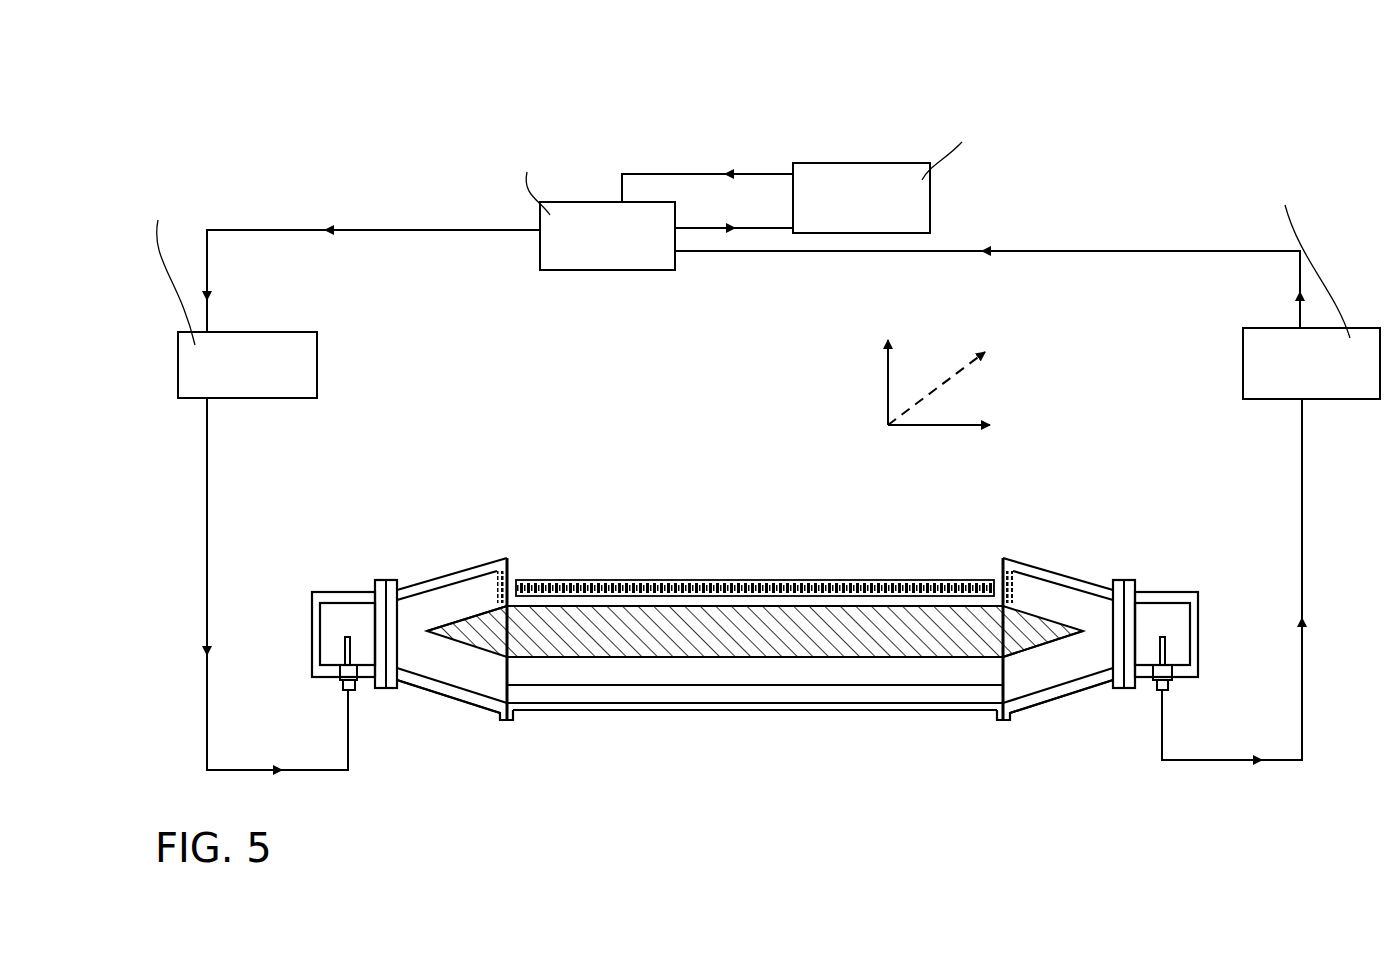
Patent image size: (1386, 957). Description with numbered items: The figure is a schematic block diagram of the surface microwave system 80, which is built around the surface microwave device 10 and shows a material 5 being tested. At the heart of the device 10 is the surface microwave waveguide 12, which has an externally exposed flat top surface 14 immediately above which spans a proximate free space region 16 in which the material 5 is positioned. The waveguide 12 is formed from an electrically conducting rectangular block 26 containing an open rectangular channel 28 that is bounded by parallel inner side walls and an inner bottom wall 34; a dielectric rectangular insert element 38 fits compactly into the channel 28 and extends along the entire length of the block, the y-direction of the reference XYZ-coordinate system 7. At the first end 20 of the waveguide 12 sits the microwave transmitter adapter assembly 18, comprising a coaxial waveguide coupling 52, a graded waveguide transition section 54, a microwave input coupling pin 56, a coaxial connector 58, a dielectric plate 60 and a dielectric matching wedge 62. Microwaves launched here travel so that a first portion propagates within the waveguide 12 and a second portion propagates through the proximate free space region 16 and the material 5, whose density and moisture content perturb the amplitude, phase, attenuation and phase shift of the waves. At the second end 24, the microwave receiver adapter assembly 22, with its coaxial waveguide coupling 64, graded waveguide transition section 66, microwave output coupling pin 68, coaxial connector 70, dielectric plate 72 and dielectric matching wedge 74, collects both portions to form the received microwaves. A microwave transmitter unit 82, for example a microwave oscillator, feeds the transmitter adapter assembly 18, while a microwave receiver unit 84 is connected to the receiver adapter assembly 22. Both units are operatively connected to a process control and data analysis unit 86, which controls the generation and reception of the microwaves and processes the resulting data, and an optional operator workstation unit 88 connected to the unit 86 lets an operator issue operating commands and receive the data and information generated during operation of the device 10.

The material 5 is at (722, 580).
The reference XYZ-coordinate system 7 is at (938, 387).
The surface microwave device 10 is at (467, 353).
The surface microwave waveguide 12 is at (755, 720).
The externally exposed flat top surface 14 is at (795, 605).
The proximate free space region 16 is at (612, 600).
The microwave transmitter adapter assembly 18 is at (413, 770).
The first end 20 is at (520, 625).
The microwave receiver adapter assembly 22 is at (1098, 770).
The second end 24 is at (985, 640).
The electrically conducting rectangular block 26 is at (822, 690).
The open rectangular channel 28 is at (760, 660).
The inner bottom wall 34 is at (673, 690).
The dielectric rectangular insert element 38 is at (862, 632).
The coaxial waveguide coupling 52 is at (342, 592).
The graded waveguide transition section 54 is at (425, 580).
The microwave input coupling pin 56 is at (343, 643).
The coaxial connector 58 is at (340, 678).
The dielectric plate 60 is at (482, 580).
The dielectric matching wedge 62 is at (487, 652).
The coaxial waveguide coupling 64 is at (1165, 595).
The graded waveguide transition section 66 is at (1072, 585).
The microwave output coupling pin 68 is at (1168, 641).
The coaxial connector 70 is at (1175, 680).
The dielectric plate 72 is at (1018, 580).
The dielectric matching wedge 74 is at (1027, 636).
The surface microwave system 80 is at (754, 424).
The microwave transmitter unit 82 is at (232, 264).
The microwave receiver unit 84 is at (1311, 260).
The process control and data analysis unit 86 is at (586, 164).
The operator workstation unit 88 is at (936, 146).